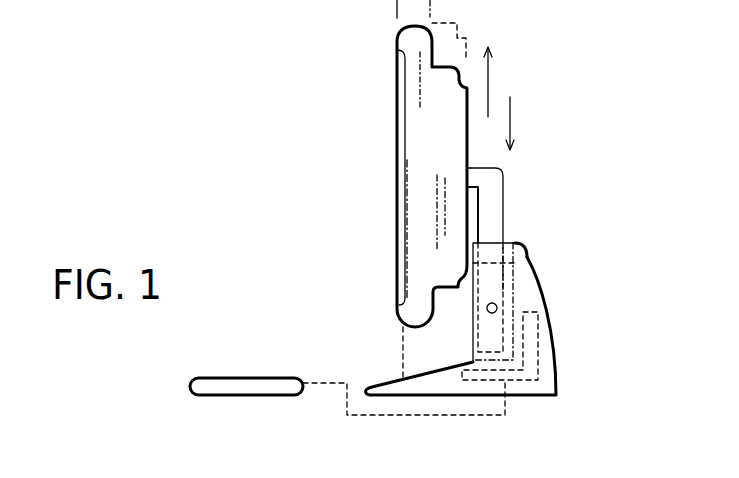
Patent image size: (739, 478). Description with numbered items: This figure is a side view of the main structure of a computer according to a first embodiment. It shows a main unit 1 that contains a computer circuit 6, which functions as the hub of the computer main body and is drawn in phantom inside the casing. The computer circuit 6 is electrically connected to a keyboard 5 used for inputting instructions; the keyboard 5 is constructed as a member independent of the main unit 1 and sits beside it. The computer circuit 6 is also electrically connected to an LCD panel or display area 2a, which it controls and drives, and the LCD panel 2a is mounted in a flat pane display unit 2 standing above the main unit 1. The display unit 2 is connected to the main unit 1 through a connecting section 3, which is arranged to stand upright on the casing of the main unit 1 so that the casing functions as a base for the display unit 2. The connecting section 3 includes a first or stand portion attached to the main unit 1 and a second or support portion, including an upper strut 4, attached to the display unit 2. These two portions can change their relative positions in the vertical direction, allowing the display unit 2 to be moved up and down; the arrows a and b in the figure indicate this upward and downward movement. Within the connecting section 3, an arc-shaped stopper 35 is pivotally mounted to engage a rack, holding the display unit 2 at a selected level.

The main unit 1 is at (556, 380).
The display unit 2 is at (417, 186).
The LCD panel 2a is at (398, 241).
The connecting section 3 is at (508, 267).
The stopper 35 is at (497, 305).
The upper strut 4 is at (497, 202).
The keyboard 5 is at (253, 382).
The computer circuit 6 is at (533, 357).
The upward movement direction a is at (490, 77).
The downward movement direction b is at (513, 125).